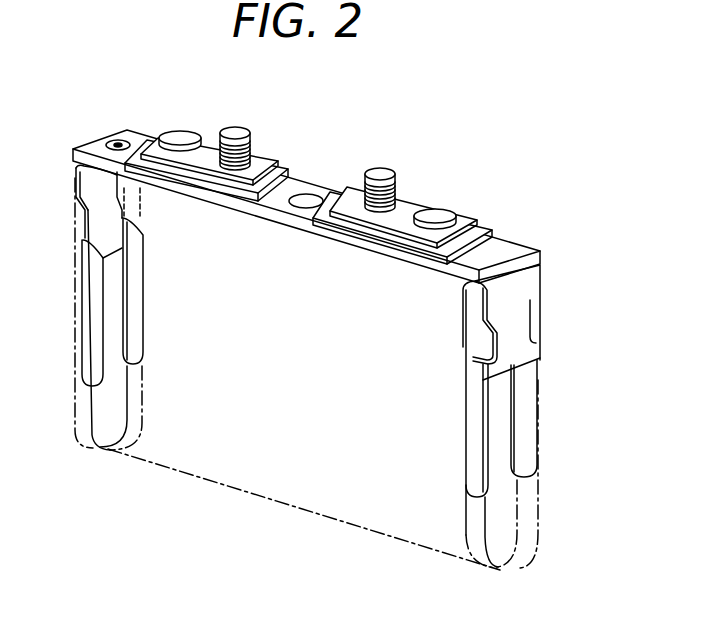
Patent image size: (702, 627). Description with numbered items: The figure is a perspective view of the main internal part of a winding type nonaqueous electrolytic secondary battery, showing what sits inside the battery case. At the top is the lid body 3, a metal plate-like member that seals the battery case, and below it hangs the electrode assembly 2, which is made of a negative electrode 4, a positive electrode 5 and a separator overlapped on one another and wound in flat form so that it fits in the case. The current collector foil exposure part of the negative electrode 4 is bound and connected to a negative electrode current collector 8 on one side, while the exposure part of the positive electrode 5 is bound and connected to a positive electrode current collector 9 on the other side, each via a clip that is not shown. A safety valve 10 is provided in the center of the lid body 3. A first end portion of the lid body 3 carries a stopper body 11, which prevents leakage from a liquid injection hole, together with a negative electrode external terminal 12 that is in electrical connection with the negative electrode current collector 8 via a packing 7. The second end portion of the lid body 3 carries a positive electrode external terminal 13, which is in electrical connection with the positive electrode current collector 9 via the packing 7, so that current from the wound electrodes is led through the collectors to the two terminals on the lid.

The electrode assembly 2 is at (258, 500).
The lid body 3 is at (512, 247).
The negative electrode 4 is at (77, 431).
The positive electrode 5 is at (467, 535).
The packing 7 is at (223, 176).
The negative electrode current collector 8 is at (81, 214).
The positive electrode current collector 9 is at (519, 318).
The safety valve 10 is at (312, 197).
The stopper body 11 is at (115, 142).
The negative electrode external terminal 12 is at (232, 130).
The positive electrode external terminal 13 is at (382, 170).